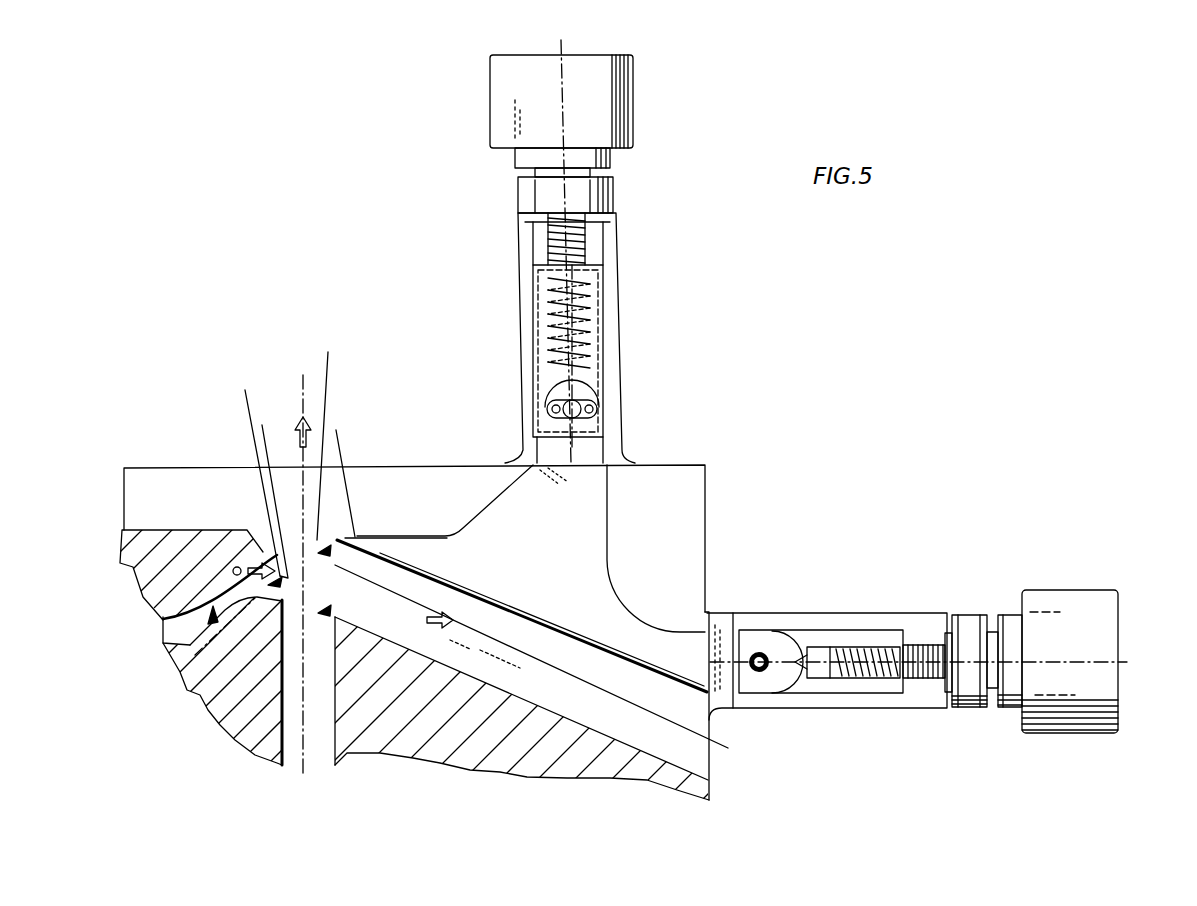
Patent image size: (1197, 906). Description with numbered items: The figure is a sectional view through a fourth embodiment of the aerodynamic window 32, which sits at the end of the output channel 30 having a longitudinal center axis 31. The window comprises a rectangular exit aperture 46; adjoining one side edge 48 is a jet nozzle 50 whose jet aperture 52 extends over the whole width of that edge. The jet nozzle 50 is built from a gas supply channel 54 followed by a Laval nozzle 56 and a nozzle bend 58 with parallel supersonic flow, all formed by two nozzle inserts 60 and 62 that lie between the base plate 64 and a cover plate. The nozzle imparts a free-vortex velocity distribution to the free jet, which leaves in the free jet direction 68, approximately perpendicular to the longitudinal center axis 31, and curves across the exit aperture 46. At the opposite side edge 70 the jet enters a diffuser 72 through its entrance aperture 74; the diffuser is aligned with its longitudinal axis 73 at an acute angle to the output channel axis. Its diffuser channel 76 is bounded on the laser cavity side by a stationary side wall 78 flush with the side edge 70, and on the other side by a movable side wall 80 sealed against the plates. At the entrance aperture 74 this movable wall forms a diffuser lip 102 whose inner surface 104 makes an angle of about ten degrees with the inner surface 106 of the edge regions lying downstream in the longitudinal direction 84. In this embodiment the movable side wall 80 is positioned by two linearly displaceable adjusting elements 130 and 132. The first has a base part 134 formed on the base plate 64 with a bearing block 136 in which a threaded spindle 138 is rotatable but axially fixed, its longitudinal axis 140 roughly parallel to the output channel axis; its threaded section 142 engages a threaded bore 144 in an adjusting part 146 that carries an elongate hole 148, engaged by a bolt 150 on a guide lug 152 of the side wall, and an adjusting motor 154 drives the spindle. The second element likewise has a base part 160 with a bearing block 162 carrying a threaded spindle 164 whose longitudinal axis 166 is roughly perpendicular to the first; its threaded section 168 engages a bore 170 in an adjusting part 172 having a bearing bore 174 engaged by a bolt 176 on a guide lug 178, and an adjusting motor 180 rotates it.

The output channel 30 is at (280, 764).
The longitudinal center axis 31 is at (300, 385).
The aerodynamic window 32 is at (240, 432).
The exit aperture 46 is at (333, 608).
The side edge 48 is at (282, 622).
The jet nozzle 50 is at (175, 657).
The jet aperture 52 is at (262, 413).
The gas supply channel 54 is at (165, 625).
The Laval nozzle 56 is at (234, 569).
The nozzle bend 58 is at (230, 565).
The nozzle insert 60 is at (230, 725).
The nozzle insert 62 is at (122, 538).
The base plate 64 is at (396, 520).
The free jet direction 68 is at (252, 378).
The side edge 70 is at (338, 622).
The diffuser 72 is at (750, 752).
The longitudinal axis 73 is at (523, 657).
The entrance aperture 74 is at (324, 431).
The diffuser channel 76 is at (600, 735).
The stationary side wall 78 is at (705, 783).
The movable side wall 80 is at (462, 542).
The longitudinal direction 84 is at (457, 622).
The diffuser lip 102 is at (352, 372).
The inner surface 104 is at (347, 543).
The inner surface 106 is at (623, 663).
The adjusting element 130 is at (668, 172).
The adjusting element 132 is at (980, 565).
The base part 134 is at (618, 318).
The bearing block 136 is at (522, 190).
The threaded spindle 138 is at (608, 238).
The longitudinal axis 140 is at (560, 95).
The threaded section 142 is at (547, 238).
The bore 144 is at (555, 295).
The adjusting part 146 is at (537, 370).
The elongate hole 148 is at (590, 410).
The bolt 150 is at (555, 405).
The guide lug 152 is at (593, 377).
The adjusting motor 154 is at (497, 122).
The base part 160 is at (850, 705).
The bearing block 162 is at (967, 693).
The threaded spindle 164 is at (930, 640).
The longitudinal axis 166 is at (1128, 664).
The threaded section 168 is at (917, 680).
The bore 170 is at (877, 647).
The adjusting part 172 is at (877, 688).
The bearing bore 174 is at (755, 650).
The bolt 176 is at (758, 673).
The guide lug 178 is at (797, 632).
The adjusting motor 180 is at (1083, 590).